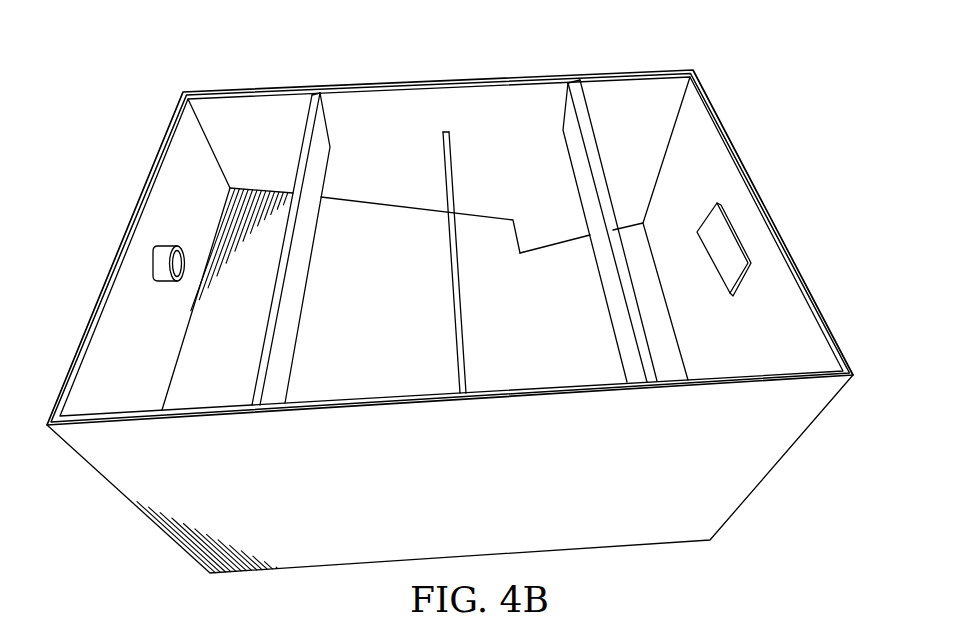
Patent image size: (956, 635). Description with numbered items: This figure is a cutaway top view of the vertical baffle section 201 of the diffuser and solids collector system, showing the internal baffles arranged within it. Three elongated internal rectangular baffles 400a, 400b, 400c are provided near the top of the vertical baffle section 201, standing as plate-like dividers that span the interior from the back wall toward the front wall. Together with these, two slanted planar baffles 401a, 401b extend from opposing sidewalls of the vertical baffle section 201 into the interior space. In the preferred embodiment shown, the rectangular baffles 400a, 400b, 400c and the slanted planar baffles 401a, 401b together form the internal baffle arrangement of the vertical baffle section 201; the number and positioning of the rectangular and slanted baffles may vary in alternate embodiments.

The vertical baffle section 201 is at (735, 128).
The elongated internal rectangular baffle 400a is at (584, 97).
The elongated internal rectangular baffle 400b is at (308, 106).
The elongated internal rectangular baffle 400c is at (448, 310).
The slanted planar baffle 401a is at (557, 248).
The slanted planar baffle 401b is at (373, 213).